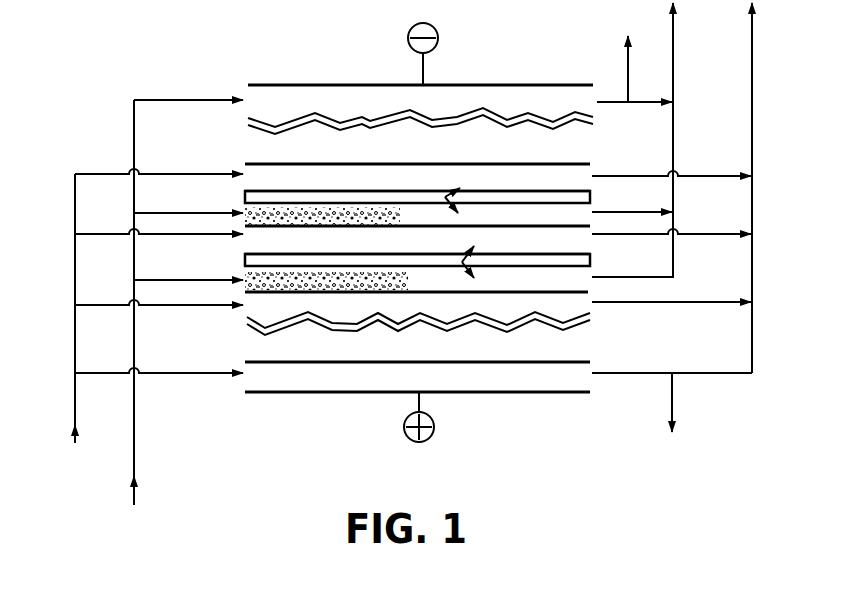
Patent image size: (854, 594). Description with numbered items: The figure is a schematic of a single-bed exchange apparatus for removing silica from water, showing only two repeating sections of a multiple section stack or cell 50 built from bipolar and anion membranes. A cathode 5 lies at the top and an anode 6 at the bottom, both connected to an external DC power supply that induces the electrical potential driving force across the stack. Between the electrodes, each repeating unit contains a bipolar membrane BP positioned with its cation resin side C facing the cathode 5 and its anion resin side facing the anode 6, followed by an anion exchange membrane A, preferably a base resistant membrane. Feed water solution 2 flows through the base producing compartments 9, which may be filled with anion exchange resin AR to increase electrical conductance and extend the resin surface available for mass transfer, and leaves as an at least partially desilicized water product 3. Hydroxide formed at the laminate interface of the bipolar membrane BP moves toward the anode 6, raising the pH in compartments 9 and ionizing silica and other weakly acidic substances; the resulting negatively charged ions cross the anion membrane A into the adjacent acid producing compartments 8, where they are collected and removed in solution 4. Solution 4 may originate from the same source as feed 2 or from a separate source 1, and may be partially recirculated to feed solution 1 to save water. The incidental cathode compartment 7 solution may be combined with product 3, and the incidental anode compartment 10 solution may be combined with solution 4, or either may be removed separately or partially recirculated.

The multiple section stack or cell 50 is at (190, 63).
The separate feed source 1 is at (73, 393).
The feed water solution 2 is at (133, 427).
The partially desilicized water product 3 is at (675, 52).
The solution removed from acid producing compartments 4 is at (755, 55).
The cathode 5 is at (561, 85).
The anode 6 is at (525, 393).
The cathode compartment 7 is at (420, 116).
The acid producing compartment 8 is at (549, 242).
The base producing compartment 9 is at (502, 229).
The anode compartment 10 is at (554, 379).
The anion exchange membrane A is at (585, 164).
The cation resin side of bipolar membrane C is at (592, 194).
The bipolar membrane BP is at (243, 196).
The anion exchange resin AR is at (326, 249).